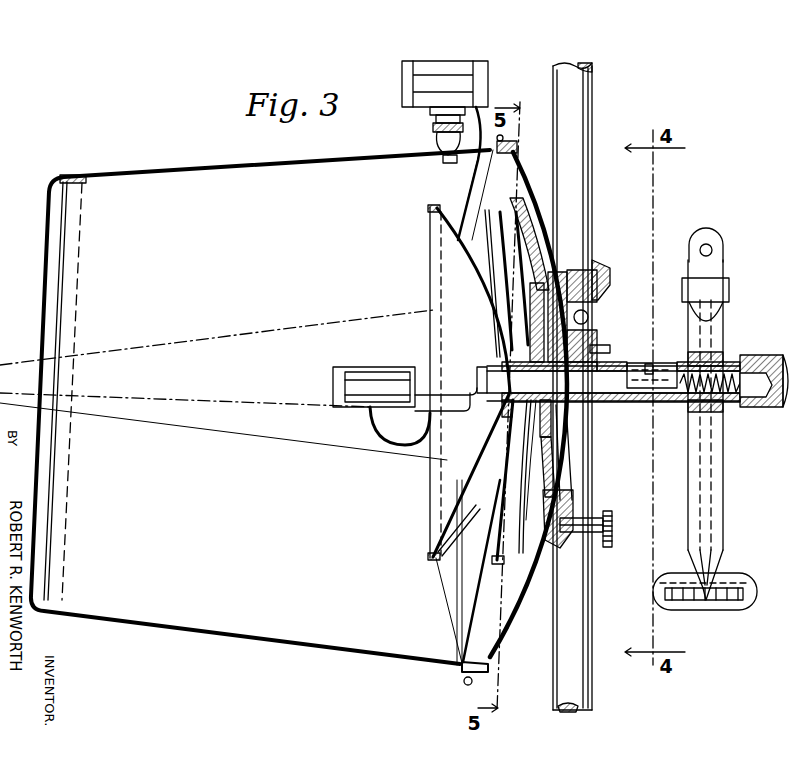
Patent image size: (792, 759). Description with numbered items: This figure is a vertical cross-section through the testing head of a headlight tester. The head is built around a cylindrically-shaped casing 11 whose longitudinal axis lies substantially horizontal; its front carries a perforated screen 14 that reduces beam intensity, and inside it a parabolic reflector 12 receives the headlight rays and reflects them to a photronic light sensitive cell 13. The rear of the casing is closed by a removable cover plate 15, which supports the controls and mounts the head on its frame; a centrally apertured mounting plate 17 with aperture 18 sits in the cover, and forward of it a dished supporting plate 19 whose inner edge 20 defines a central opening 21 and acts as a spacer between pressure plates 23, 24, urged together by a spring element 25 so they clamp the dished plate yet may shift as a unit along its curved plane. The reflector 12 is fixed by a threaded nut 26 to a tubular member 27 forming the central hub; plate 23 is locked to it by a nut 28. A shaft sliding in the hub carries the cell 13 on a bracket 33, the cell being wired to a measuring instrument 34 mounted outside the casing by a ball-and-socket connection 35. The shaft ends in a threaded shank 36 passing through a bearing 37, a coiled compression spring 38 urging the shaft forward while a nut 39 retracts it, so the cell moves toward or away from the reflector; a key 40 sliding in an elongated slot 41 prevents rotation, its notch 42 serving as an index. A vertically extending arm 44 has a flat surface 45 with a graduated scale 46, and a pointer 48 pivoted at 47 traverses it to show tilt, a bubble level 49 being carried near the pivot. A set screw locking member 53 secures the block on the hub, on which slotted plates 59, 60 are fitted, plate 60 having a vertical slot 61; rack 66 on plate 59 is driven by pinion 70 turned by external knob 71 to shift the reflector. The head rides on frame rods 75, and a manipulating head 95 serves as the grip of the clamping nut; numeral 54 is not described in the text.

The casing 11 is at (192, 165).
The parabolic reflector 12 is at (490, 512).
The light sensitive cell 13 is at (360, 385).
The perforated screen 14 is at (48, 279).
The removable cover plate 15 is at (538, 191).
The mounting plate 17 is at (553, 543).
The aperture 18 is at (572, 470).
The dished supporting plate 19 is at (482, 605).
The inner edge 20 is at (510, 505).
The central opening 21 is at (517, 471).
The pressure plate 23 is at (535, 430).
The pressure plate 24 is at (530, 445).
The spring element 25 is at (552, 432).
The threaded nut 26 is at (520, 363).
The tubular member 27 is at (593, 345).
The nut 28 is at (545, 345).
The bracket 33 is at (452, 407).
The electrical measuring instrument 34 is at (438, 85).
The ball-and-socket connection 35 is at (432, 128).
The threaded shank 36 is at (715, 378).
The bearing 37 is at (768, 408).
The coiled compression spring 38 is at (720, 399).
The nut 39 is at (757, 357).
The key 40 is at (662, 375).
The elongated slot 41 is at (602, 364).
The notch 42 is at (648, 366).
The vertically extending arm 44 is at (723, 489).
The flat surface 45 is at (730, 577).
The graduated scale 46 is at (712, 600).
The pivot 47 is at (714, 251).
The pointer 48 is at (712, 472).
The circular liquid bubble level 49 is at (718, 283).
The set screw locking member 53 is at (583, 355).
The cable loop 54 is at (418, 385).
The slotted plate 59 is at (545, 335).
The slotted plate 60 is at (556, 490).
The elongated slot 61 is at (562, 450).
The rack 66 is at (533, 233).
The pinion 70 is at (543, 270).
The knob 71 is at (600, 270).
The rod 75 is at (585, 108).
The manipulating head 95 is at (612, 527).